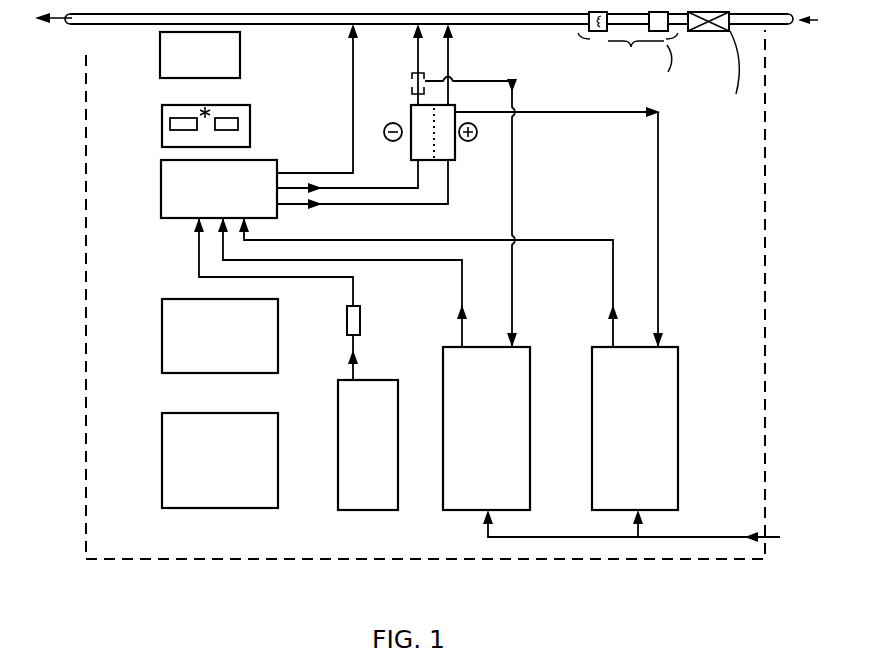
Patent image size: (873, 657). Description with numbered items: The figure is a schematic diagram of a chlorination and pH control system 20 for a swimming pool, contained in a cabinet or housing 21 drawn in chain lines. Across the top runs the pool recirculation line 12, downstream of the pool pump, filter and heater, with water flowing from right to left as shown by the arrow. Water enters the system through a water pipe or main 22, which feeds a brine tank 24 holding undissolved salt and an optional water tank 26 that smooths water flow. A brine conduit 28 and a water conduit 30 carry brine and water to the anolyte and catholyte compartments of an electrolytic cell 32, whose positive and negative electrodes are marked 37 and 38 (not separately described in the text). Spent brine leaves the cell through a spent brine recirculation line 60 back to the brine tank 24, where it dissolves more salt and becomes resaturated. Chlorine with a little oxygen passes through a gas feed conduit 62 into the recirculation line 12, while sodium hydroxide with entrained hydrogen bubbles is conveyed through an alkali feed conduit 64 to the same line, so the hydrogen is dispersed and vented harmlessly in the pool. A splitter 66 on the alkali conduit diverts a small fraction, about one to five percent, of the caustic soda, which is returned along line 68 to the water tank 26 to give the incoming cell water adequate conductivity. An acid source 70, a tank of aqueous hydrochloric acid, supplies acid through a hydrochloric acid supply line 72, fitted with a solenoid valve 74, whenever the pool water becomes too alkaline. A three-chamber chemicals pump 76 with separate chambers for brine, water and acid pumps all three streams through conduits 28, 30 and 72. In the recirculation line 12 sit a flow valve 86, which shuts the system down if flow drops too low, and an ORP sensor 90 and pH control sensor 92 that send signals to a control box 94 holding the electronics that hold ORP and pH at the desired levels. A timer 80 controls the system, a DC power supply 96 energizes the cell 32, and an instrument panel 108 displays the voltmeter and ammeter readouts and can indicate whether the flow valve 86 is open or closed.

The recirculation line 12 is at (546, 27).
The chlorination and pH control system 20 is at (126, 537).
The cabinet or housing 21 is at (185, 560).
The water pipe or main 22 is at (535, 537).
The brine tank 24 is at (678, 453).
The water tank 26 is at (530, 437).
The brine conduit 28 is at (383, 207).
The water conduit 30 is at (343, 192).
The electrolytic cell 32 is at (437, 141).
The anode 37 is at (456, 107).
The cathode 38 is at (411, 149).
The spent brine recirculation line 60 is at (597, 115).
The gas feed conduit 62 is at (452, 47).
The alkali feed conduit 64 is at (416, 66).
The splitter 66 is at (413, 95).
The caustic line 68 is at (513, 198).
The acid source 70 is at (339, 460).
The hydrochloric acid supply line 72 is at (352, 95).
The solenoid valve 74 is at (362, 318).
The chemicals pump 76 is at (160, 192).
The timer 80 is at (243, 57).
The flow valve 86 is at (736, 94).
The oxidation-reduction potential sensor 90 is at (616, 51).
The pH control sensor 92 is at (588, 38).
The control box 94 is at (278, 352).
The DC power supply 96 is at (278, 435).
The instrument panel 108 is at (251, 128).